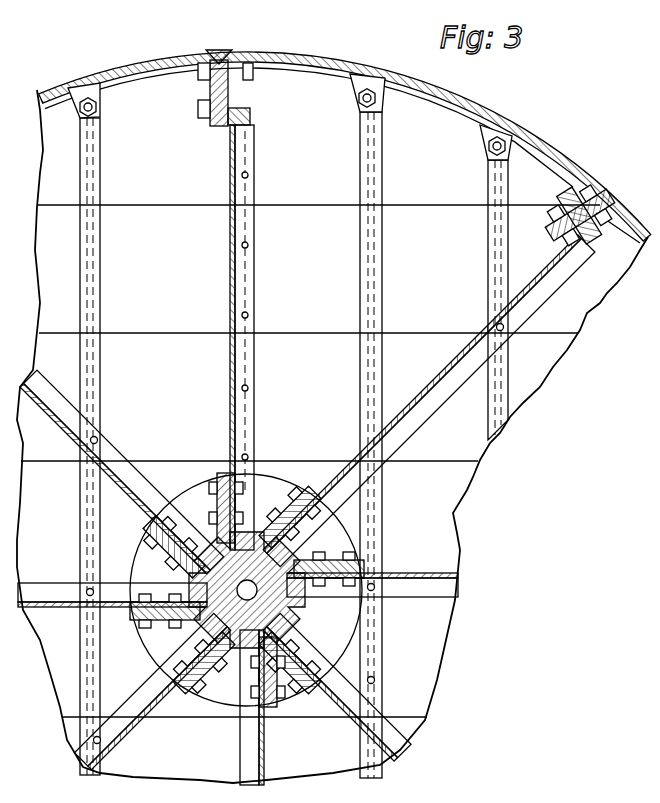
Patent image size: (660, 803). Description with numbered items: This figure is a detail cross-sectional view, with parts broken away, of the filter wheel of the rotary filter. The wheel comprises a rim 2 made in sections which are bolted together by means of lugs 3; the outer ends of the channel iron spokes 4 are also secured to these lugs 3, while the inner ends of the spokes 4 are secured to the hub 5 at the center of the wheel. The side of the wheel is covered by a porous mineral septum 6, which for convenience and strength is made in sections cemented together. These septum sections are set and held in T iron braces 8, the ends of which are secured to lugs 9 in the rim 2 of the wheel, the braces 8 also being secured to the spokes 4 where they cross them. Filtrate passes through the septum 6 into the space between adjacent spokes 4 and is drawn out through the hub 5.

The rim 2 is at (145, 58).
The lugs 3 is at (206, 88).
The channel iron spokes 4 is at (229, 227).
The hub 5 is at (212, 490).
The porous mineral septum 6 is at (50, 253).
The T iron braces 8 is at (360, 147).
The lugs 9 is at (80, 112).